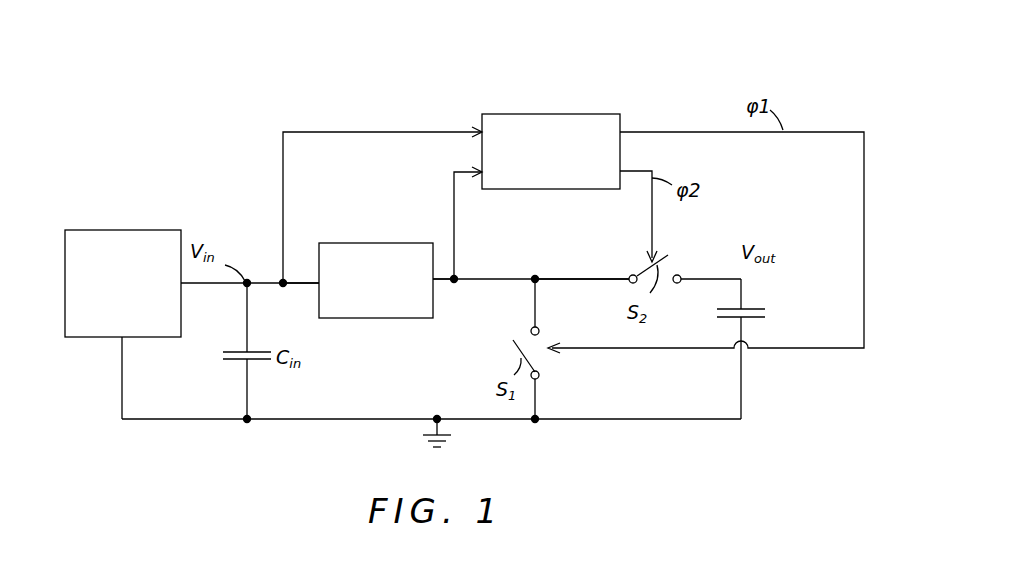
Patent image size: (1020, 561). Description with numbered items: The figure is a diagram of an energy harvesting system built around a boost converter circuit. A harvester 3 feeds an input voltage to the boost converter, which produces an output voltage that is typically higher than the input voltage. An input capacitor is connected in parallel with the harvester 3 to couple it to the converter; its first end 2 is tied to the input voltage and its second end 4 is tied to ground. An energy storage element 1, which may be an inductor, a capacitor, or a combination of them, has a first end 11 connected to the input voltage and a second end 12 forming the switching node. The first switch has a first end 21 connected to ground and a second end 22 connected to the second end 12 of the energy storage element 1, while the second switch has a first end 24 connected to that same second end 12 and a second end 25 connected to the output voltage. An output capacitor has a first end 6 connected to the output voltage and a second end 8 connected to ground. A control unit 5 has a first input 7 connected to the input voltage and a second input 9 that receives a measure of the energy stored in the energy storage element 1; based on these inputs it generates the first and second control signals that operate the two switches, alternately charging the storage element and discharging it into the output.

The energy storage element 1 is at (352, 243).
The first end of capacitor Cin 2 is at (247, 323).
The harvester 3 is at (105, 228).
The second end of capacitor Cin 4 is at (247, 389).
The control unit 5 is at (520, 114).
The first end of capacitor Cout 6 is at (740, 303).
The first input of control unit 7 is at (320, 130).
The second end of capacitor Cout 8 is at (740, 390).
The second input of control unit 9 is at (454, 239).
The first end of energy storage element 11 is at (306, 287).
The second end of energy storage element 12 is at (442, 282).
The first end of switch S1 21 is at (539, 385).
The second end of switch S1 22 is at (538, 310).
The first end of switch S2 24 is at (588, 277).
The second end of switch S2 25 is at (718, 277).